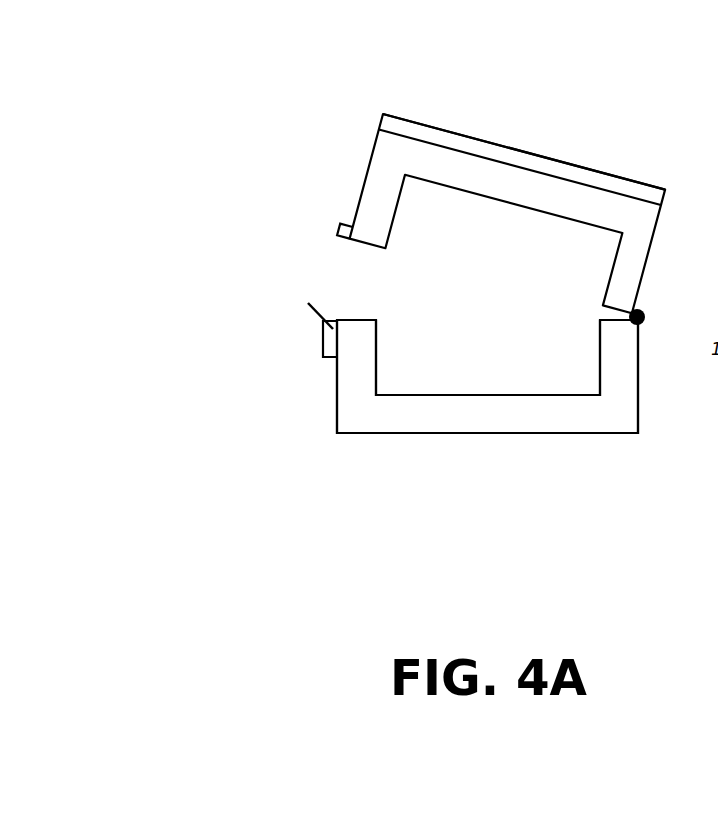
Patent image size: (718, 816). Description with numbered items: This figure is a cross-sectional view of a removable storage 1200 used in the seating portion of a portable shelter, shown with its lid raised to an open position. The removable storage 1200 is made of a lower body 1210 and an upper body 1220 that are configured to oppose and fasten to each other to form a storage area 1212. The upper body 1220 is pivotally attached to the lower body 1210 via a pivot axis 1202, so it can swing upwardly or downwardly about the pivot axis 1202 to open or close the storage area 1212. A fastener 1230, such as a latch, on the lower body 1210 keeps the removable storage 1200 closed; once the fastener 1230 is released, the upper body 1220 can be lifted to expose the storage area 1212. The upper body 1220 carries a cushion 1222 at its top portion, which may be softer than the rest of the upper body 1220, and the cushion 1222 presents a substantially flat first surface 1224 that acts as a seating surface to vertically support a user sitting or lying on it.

The removable storage 1200 is at (373, 86).
The pivot axis 1202 is at (630, 312).
The lower body 1210 is at (352, 412).
The storage area 1212 is at (461, 299).
The upper body 1220 is at (382, 197).
The cushion 1222 is at (393, 127).
The first surface 1224 is at (482, 136).
The fastener 1230 is at (323, 342).